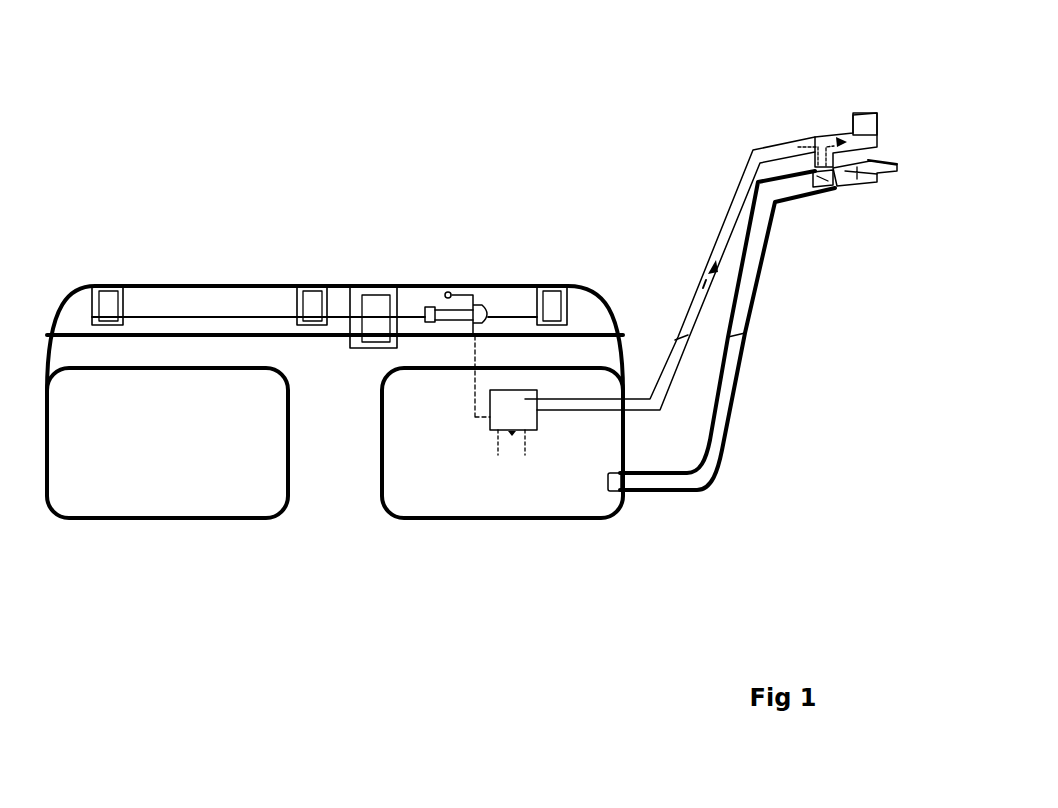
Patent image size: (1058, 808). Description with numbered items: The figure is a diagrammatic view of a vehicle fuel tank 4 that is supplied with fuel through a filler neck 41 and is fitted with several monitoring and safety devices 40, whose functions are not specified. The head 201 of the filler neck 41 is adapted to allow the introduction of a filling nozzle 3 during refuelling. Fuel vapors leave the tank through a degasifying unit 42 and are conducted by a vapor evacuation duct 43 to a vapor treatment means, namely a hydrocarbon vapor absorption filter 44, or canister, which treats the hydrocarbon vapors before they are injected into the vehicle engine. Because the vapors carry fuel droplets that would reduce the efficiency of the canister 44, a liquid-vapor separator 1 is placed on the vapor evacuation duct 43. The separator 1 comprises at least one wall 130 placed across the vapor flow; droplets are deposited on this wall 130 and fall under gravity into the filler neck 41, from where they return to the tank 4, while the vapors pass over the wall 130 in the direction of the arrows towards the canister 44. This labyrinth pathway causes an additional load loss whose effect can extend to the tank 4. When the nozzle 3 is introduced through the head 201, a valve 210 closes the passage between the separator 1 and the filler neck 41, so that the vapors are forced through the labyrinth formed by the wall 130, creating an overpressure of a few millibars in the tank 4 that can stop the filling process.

The liquid-vapor separator 1 is at (789, 97).
The filling nozzle 3 is at (887, 179).
The fuel tank 4 is at (497, 548).
The monitoring and safety devices 40 is at (105, 298).
The filler neck 41 is at (742, 315).
The degasifying unit 42 is at (513, 407).
The vapor evacuation duct 43 is at (717, 252).
The hydrocarbon vapor absorption filter 44 is at (865, 122).
The wall 130 is at (813, 138).
The head 201 is at (877, 163).
The valve 210 is at (823, 188).